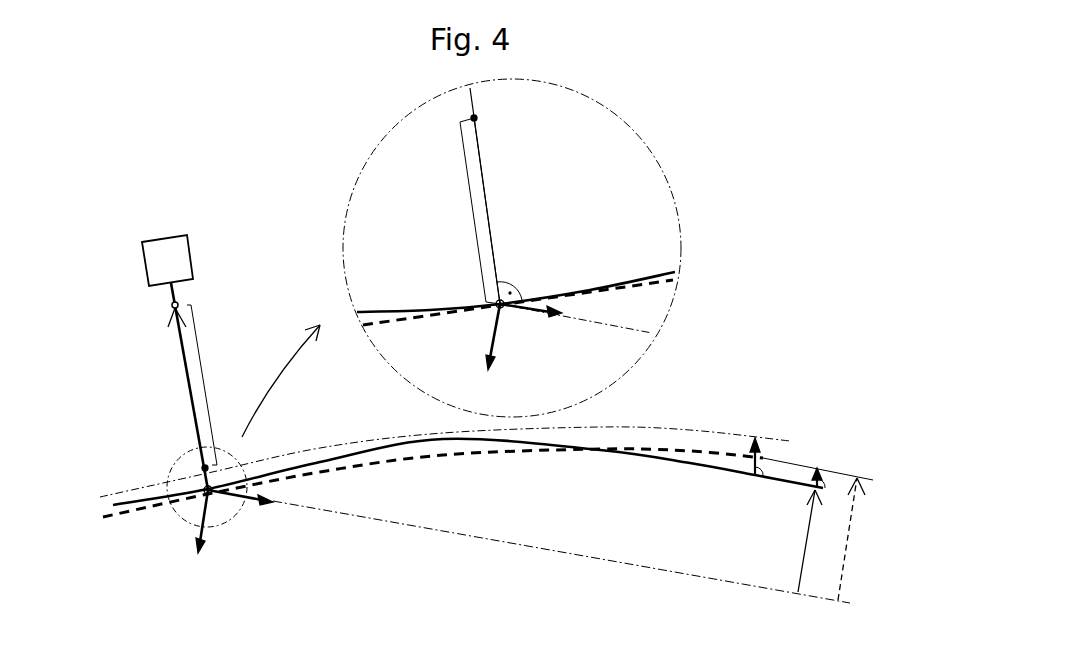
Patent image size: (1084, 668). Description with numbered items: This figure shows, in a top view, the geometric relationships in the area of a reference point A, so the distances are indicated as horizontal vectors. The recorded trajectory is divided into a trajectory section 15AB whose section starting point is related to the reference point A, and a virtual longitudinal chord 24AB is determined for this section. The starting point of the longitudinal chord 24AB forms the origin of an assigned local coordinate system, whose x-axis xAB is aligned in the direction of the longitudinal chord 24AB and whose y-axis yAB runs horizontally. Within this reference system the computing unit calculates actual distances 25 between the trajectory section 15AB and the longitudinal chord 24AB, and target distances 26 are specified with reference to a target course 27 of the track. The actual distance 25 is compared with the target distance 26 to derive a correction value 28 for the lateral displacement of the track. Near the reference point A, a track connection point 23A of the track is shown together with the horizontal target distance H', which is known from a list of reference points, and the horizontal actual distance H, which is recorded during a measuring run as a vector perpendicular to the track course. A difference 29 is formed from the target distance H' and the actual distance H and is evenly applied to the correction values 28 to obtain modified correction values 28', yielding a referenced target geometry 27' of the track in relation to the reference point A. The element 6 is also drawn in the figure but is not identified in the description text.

The sensor / detector unit 6 is at (167, 247).
The first reference point A is at (171, 305).
The horizontal actual distance H is at (331, 289).
The horizontal target distance H' is at (218, 385).
The track connection point 23A is at (203, 467).
The x-axis of local coordinate system xAB is at (389, 418).
The y-axis of local coordinate system yAB is at (329, 433).
The trajectory section 15AB is at (688, 465).
The target course 27 is at (488, 483).
The referenced target geometry 27' is at (445, 440).
The correction value 28 is at (848, 461).
The modified correction value 28' is at (784, 442).
The actual distance 25 is at (805, 525).
The target distance 26 is at (855, 508).
The virtual longitudinal chord 24AB is at (547, 550).
The difference 29 is at (472, 213).